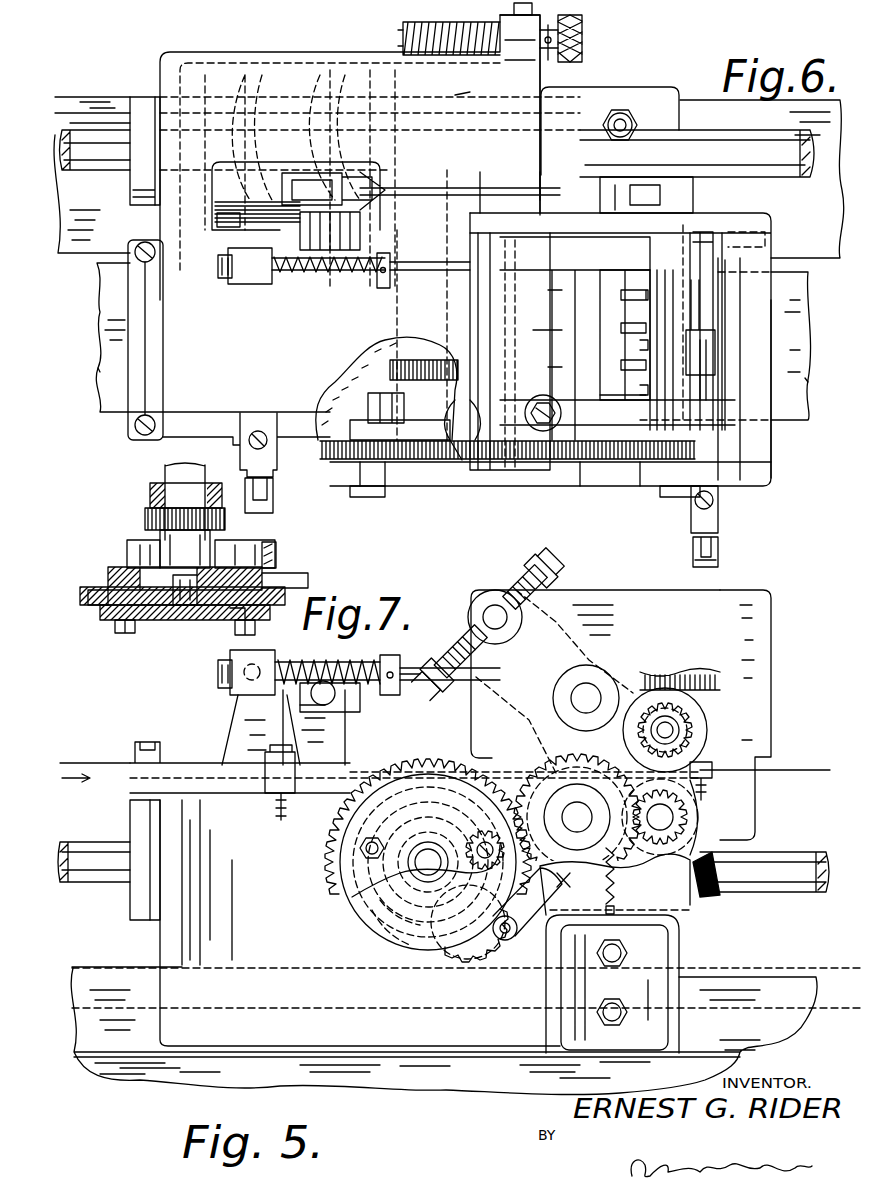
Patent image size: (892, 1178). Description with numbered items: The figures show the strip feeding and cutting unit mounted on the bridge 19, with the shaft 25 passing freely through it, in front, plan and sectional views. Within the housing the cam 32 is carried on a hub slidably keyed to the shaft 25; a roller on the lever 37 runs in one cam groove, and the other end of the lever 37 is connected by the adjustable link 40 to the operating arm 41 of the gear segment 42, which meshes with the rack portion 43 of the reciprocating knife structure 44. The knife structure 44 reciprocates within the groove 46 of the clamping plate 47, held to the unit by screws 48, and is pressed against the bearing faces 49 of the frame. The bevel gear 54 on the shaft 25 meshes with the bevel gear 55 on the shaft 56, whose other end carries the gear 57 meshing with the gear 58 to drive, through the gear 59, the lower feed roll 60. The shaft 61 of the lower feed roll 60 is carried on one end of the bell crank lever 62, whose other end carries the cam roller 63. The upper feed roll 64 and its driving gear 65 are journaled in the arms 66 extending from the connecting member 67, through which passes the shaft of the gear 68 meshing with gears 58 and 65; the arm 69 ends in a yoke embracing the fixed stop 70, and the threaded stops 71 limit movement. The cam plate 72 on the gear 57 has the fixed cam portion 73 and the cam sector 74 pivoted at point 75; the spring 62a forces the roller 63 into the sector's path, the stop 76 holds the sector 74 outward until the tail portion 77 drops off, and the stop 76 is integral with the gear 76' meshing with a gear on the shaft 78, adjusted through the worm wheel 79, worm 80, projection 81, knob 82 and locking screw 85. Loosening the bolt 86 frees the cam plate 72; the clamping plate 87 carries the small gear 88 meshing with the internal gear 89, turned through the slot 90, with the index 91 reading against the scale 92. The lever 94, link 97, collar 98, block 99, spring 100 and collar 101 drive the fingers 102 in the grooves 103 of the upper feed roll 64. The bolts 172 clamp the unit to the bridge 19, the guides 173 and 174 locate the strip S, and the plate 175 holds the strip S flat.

In FIG. 6, the bridge 19 is at (78, 248).
In FIG. 5, the bridge 19 is at (774, 984).
In FIG. 6, the shaft 25 is at (115, 165).
In FIG. 5, the shaft 25 is at (90, 878).
In FIG. 6, the cam 32 is at (285, 76).
In FIG. 6, the lever 37 is at (290, 272).
In FIG. 5, the lever 37 is at (340, 738).
In FIG. 6, the adjustable link 40 is at (520, 188).
In FIG. 5, the adjustable link 40 is at (432, 688).
In FIG. 6, the operating arm 41 is at (640, 190).
In FIG. 6, the gear segment 42 is at (700, 345).
In FIG. 6, the rack portion 43 is at (708, 356).
In FIG. 6, the reciprocating knife structure 44 is at (745, 396).
In FIG. 6, the groove 46 is at (722, 492).
In FIG. 6, the clamping plate 47 is at (772, 486).
In FIG. 5, the clamping plate 47 is at (762, 668).
In FIG. 6, the screws 48 is at (772, 228).
In FIG. 6, the bearing faces 49 is at (712, 288).
In FIG. 6, the bevel gear 54 is at (398, 184).
In FIG. 6, the bevel gear 55 is at (358, 225).
In FIG. 6, the shaft 56 is at (398, 316).
In FIG. 7, the shaft 56 is at (176, 478).
In FIG. 6, the gear 57 is at (404, 486).
In FIG. 7, the gear 57 is at (83, 597).
In FIG. 5, the gear 58 is at (550, 750).
In FIG. 5, the gear 59 is at (648, 865).
In FIG. 5, the lower feed roll 60 is at (620, 862).
In FIG. 5, the shaft 61 is at (667, 819).
In FIG. 7, the bell crank lever 62 is at (310, 580).
In FIG. 5, the bell crank lever 62 is at (558, 880).
In FIG. 5, the spring 62a is at (618, 914).
In FIG. 7, the cam roller 63 is at (277, 560).
In FIG. 5, the cam roller 63 is at (510, 940).
In FIG. 6, the upper feed roll 64 is at (640, 487).
In FIG. 5, the upper feed roll 64 is at (703, 716).
In FIG. 5, the driving gear 65 is at (706, 733).
In FIG. 6, the arms 66 is at (602, 341).
In FIG. 6, the connecting member 67 is at (562, 353).
In FIG. 6, the gear 68 is at (592, 487).
In FIG. 5, the gear 68 is at (648, 700).
In FIG. 5, the arm 69 is at (522, 580).
In FIG. 6, the fixed stop 70 is at (460, 464).
In FIG. 5, the fixed stop 70 is at (492, 612).
In FIG. 6, the threaded stops 71 is at (562, 414).
In FIG. 5, the threaded stops 71 is at (545, 556).
In FIG. 6, the cam plate 72 is at (345, 425).
In FIG. 7, the cam plate 72 is at (110, 578).
In FIG. 5, the cam plate 72 is at (350, 902).
In FIG. 6, the fixed cam portion 73 is at (340, 395).
In FIG. 7, the fixed cam portion 73 is at (128, 552).
In FIG. 5, the fixed cam portion 73 is at (393, 933).
In FIG. 7, the cam sector 74 is at (242, 545).
In FIG. 5, the cam sector 74 is at (457, 888).
In FIG. 6, the pivot point 75 is at (385, 430).
In FIG. 5, the pivot point 75 is at (377, 918).
In FIG. 7, the stop 76 is at (208, 538).
In FIG. 5, the stop 76 is at (428, 890).
In FIG. 6, the gear 76' is at (377, 388).
In FIG. 7, the gear 76' is at (160, 513).
In FIG. 5, the tail portion 77 is at (506, 906).
In FIG. 6, the shaft 78 is at (455, 95).
In FIG. 5, the shaft 78 is at (478, 962).
In FIG. 6, the worm wheel 79 is at (418, 32).
In FIG. 6, the worm 80 is at (448, 30).
In FIG. 6, the projection 81 is at (530, 60).
In FIG. 6, the knob 82 is at (584, 38).
In FIG. 6, the locking screw 85 is at (534, 6).
In FIG. 7, the bolt 86 is at (130, 635).
In FIG. 7, the clamping plate 87 is at (166, 622).
In FIG. 7, the small gear 88 is at (254, 634).
In FIG. 7, the internal gear 89 is at (96, 607).
In FIG. 7, the slot 90 is at (240, 620).
In FIG. 5, the index 91 is at (540, 770).
In FIG. 5, the scale 92 is at (569, 817).
In FIG. 5, the lever 94 is at (250, 727).
In FIG. 6, the link 97 is at (410, 272).
In FIG. 6, the collar 98 is at (222, 278).
In FIG. 5, the collar 98 is at (232, 682).
In FIG. 6, the block 99 is at (248, 285).
In FIG. 5, the block 99 is at (260, 688).
In FIG. 5, the spring 100 is at (340, 662).
In FIG. 5, the collar 101 is at (400, 660).
In FIG. 6, the fingers 102 is at (548, 367).
In FIG. 6, the grooves 103 is at (625, 352).
In FIG. 6, the bolts 172 is at (626, 112).
In FIG. 6, the guide 173 is at (275, 487).
In FIG. 5, the guide 173 is at (284, 795).
In FIG. 6, the guide 174 is at (718, 510).
In FIG. 5, the guide 174 is at (714, 777).
In FIG. 6, the plate or strap 175 is at (136, 425).
In FIG. 5, the plate or strap 175 is at (148, 745).
In FIG. 6, the strip S is at (98, 368).
In FIG. 5, the strip S is at (90, 762).